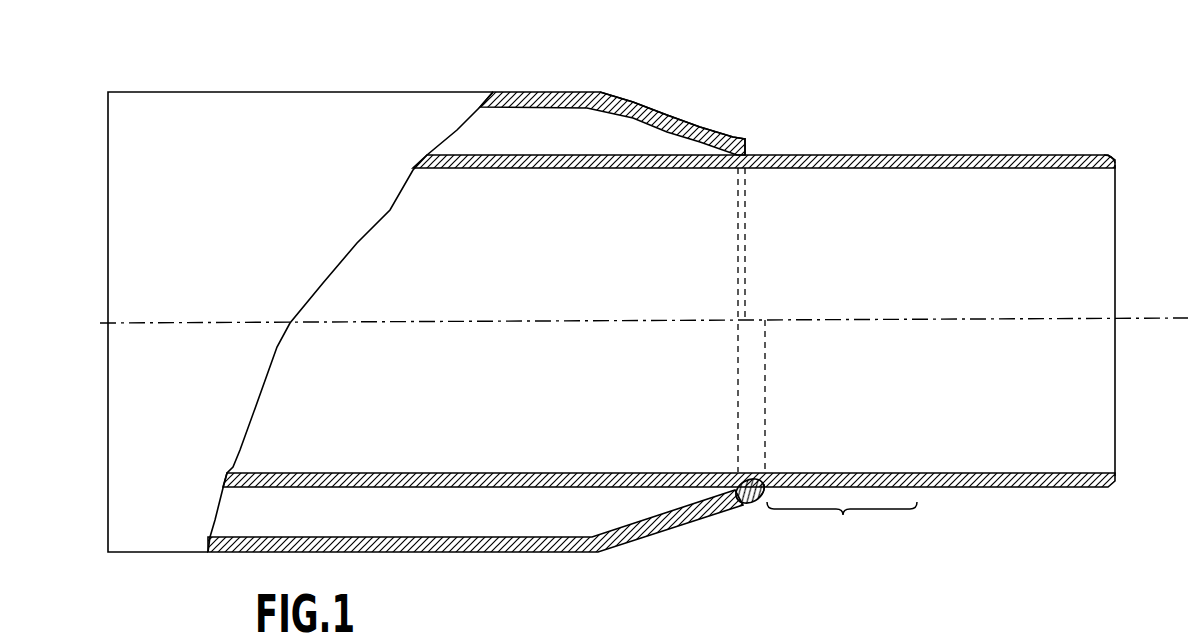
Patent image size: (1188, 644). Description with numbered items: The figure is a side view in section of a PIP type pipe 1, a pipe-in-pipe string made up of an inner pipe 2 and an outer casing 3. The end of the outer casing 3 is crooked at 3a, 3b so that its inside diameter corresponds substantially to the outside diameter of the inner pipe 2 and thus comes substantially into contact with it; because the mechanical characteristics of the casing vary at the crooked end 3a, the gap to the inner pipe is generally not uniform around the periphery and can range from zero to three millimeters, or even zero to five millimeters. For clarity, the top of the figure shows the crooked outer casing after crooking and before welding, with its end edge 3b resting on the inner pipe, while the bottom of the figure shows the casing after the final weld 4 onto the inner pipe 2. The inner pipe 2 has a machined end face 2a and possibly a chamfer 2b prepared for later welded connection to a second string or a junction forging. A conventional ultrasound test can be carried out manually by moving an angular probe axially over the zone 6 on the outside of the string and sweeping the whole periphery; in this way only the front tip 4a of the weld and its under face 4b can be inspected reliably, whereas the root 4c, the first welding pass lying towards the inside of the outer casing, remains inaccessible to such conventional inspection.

The PIP type pipe 1 is at (893, 97).
The inner pipe 2 is at (1010, 153).
The end face 2a is at (1118, 160).
The chamfer 2b is at (1115, 154).
The outer casing 3 is at (540, 90).
The crooked end 3a is at (690, 110).
The crooked end 3b is at (748, 139).
The weld 4 is at (752, 507).
The front tip of the weld 4a is at (768, 492).
The under face 4b is at (748, 472).
The root of the weld 4c is at (735, 472).
The zone 6 is at (842, 525).